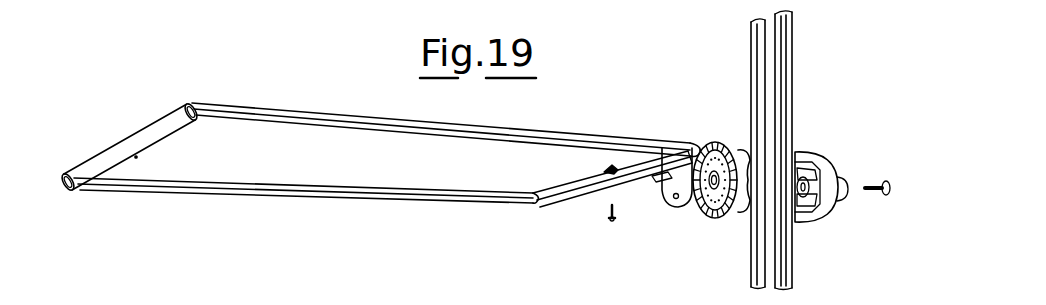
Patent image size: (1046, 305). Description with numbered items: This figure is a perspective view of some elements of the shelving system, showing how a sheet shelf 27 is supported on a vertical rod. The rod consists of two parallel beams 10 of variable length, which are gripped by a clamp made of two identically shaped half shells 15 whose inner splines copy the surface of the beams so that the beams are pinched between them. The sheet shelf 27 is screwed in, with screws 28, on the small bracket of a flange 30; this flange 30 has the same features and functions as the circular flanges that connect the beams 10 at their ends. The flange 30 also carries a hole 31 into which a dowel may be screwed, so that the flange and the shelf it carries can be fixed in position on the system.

The parallel beams 10 is at (797, 63).
The half shells 15 is at (818, 145).
The sheet shelves 27 is at (338, 120).
The screws 28 is at (664, 172).
The flanges 30 is at (688, 150).
The hole 31 is at (683, 207).